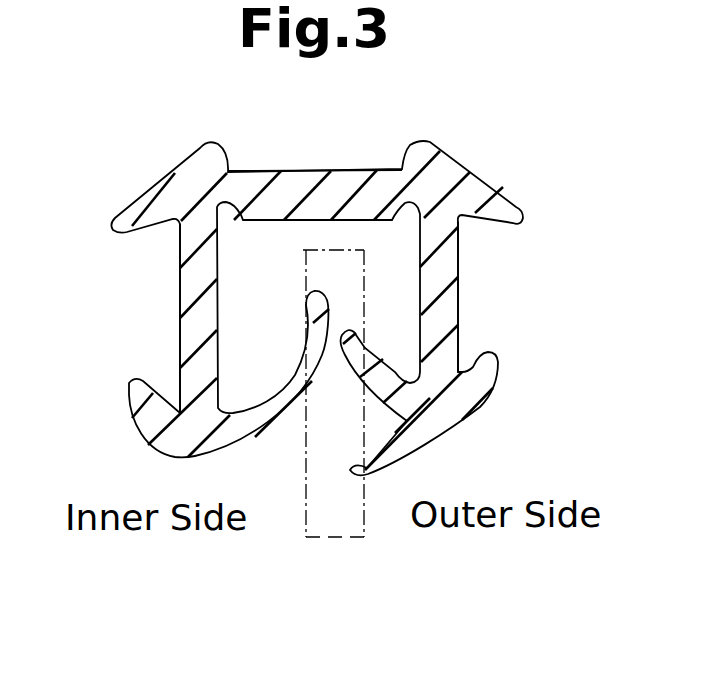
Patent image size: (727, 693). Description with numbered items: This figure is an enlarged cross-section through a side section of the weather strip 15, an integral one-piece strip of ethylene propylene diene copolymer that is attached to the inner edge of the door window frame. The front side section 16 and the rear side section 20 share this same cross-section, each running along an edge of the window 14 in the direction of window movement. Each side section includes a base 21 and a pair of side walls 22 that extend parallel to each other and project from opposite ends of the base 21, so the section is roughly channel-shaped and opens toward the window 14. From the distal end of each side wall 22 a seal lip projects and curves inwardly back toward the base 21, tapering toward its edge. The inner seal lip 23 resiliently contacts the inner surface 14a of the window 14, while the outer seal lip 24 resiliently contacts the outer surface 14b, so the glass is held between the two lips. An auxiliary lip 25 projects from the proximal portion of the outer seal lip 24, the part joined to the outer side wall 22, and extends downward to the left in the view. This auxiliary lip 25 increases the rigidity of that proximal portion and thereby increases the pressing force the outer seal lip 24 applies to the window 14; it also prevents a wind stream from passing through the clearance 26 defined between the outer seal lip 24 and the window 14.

The window 14 is at (343, 532).
The inner surface 14a is at (312, 523).
The outer surface 14b is at (362, 523).
The weather strip 15 is at (254, 170).
The front side section 16 is at (338, 168).
The rear side section 20 is at (317, 163).
The base 21 is at (259, 222).
The side walls 22 is at (179, 288).
The inner seal lip 23 is at (262, 399).
The outer seal lip 24 is at (388, 370).
The auxiliary lip 25 is at (403, 450).
The clearance 26 is at (387, 424).